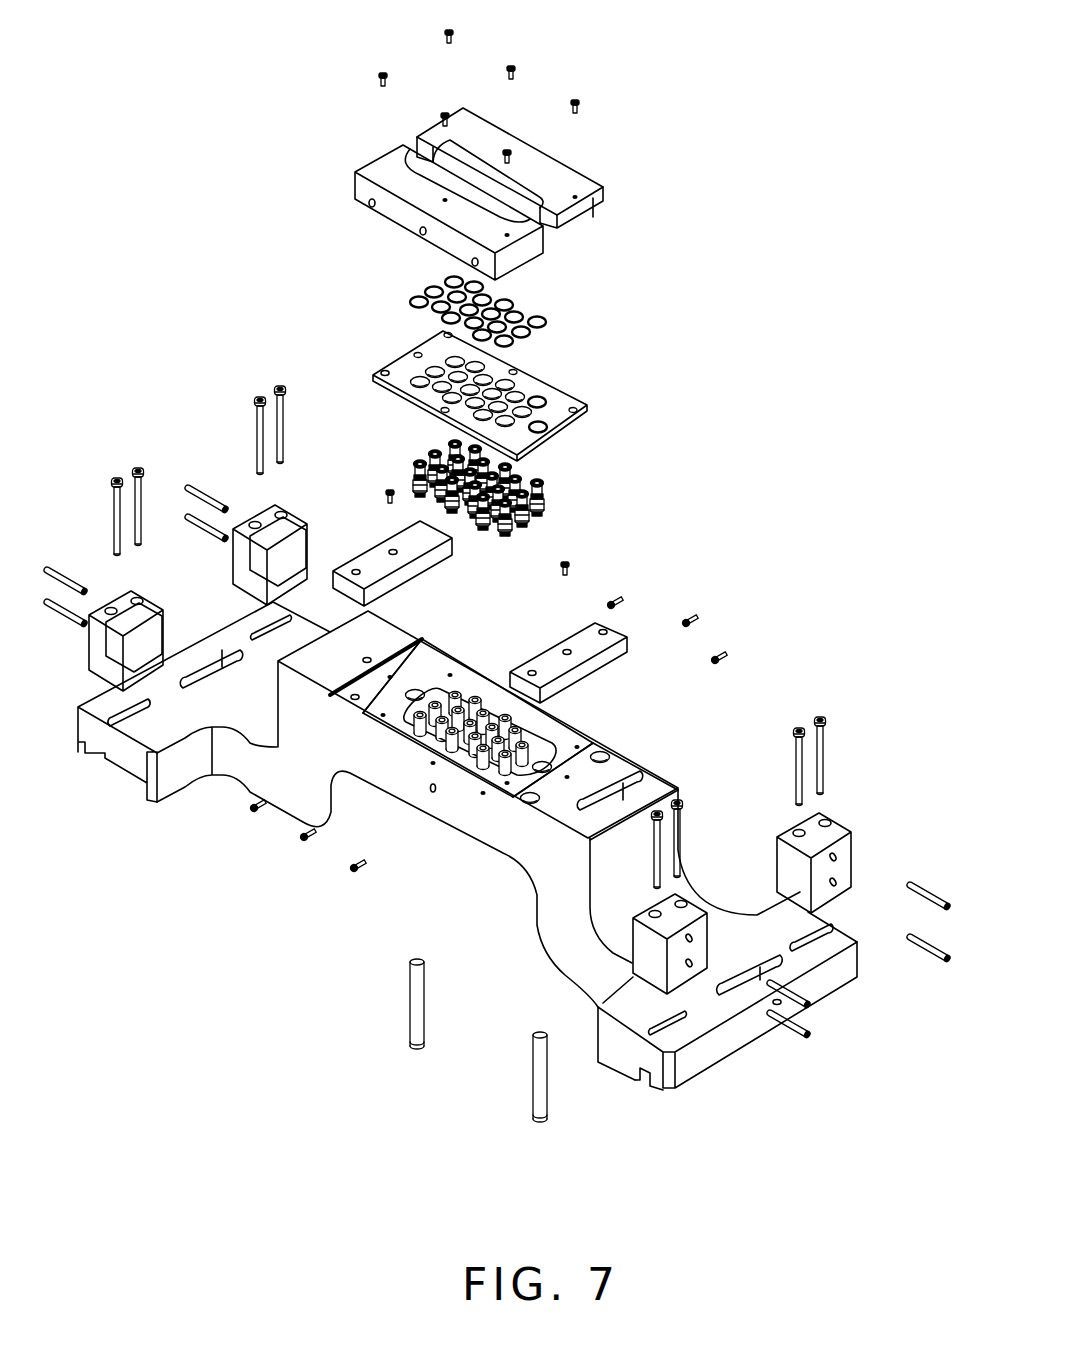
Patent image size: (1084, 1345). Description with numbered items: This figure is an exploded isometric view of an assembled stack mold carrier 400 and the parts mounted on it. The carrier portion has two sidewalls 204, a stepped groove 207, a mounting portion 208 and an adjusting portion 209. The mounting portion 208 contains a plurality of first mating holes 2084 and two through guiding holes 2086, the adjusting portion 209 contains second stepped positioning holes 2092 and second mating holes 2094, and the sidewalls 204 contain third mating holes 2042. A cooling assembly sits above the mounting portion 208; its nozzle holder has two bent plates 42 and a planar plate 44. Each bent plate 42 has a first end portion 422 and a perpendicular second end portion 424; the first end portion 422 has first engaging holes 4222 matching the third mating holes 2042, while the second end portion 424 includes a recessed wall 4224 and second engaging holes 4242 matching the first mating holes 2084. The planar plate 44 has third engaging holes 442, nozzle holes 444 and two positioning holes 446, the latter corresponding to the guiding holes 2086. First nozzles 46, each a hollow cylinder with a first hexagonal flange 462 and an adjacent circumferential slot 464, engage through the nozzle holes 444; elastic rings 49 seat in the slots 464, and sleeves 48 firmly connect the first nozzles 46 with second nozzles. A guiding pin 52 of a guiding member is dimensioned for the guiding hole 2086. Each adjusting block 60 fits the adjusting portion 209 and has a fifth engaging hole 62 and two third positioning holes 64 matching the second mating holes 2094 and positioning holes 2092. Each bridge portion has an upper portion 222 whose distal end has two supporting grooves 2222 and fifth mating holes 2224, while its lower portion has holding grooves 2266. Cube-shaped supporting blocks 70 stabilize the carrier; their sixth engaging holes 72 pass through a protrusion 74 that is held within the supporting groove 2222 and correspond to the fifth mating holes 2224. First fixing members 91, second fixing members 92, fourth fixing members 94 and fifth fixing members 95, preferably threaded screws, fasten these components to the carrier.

The clamping fixture 400 is at (537, 31).
The second fixing members 92 is at (582, 103).
The bent plate 42 is at (272, 142).
The first end portion 422 is at (405, 212).
The second end portion 424 is at (465, 168).
The second engaging holes 4242 is at (385, 162).
The first engaging holes 4222 is at (370, 205).
The recessed wall 4224 is at (535, 180).
The rings 49 is at (512, 302).
The planar plate 44 is at (471, 396).
The third engaging holes 442 is at (385, 373).
The nozzle holes 444 is at (545, 400).
The positioning holes 446 is at (548, 427).
The first nozzles 46 is at (516, 493).
The circumferential slot 464 is at (545, 498).
The first hexagonal flange 462 is at (542, 518).
The fourth fixing members 94 is at (386, 493).
The stepped groove 207 is at (497, 600).
The sidewalls 204 is at (439, 795).
The second stepped positioning holes 2092 is at (338, 795).
The second mating holes 2094 is at (390, 677).
The mounting portion 208 is at (478, 755).
The adjusting portion 209 is at (457, 673).
The first mating holes 2084 is at (497, 797).
The guiding holes 2086 is at (543, 740).
The third mating holes 2042 is at (382, 737).
The sleeves 48 is at (547, 722).
The adjusting block 60 is at (589, 654).
The fifth engaging hole 62 is at (570, 652).
The third positioning holes 64 is at (536, 673).
The first fixing members 91 is at (252, 807).
The fifth fixing members 95 is at (827, 723).
The supporting block 70 is at (495, 749).
The sixth engaging holes 72 is at (863, 824).
The fifth mating holes 2224 is at (820, 940).
The upper portion 222 is at (758, 1026).
The supporting grooves 2222 is at (820, 937).
The holding grooves 2266 is at (648, 1075).
The guiding pin 52 is at (413, 1003).
The protrusion 74 is at (597, 1003).